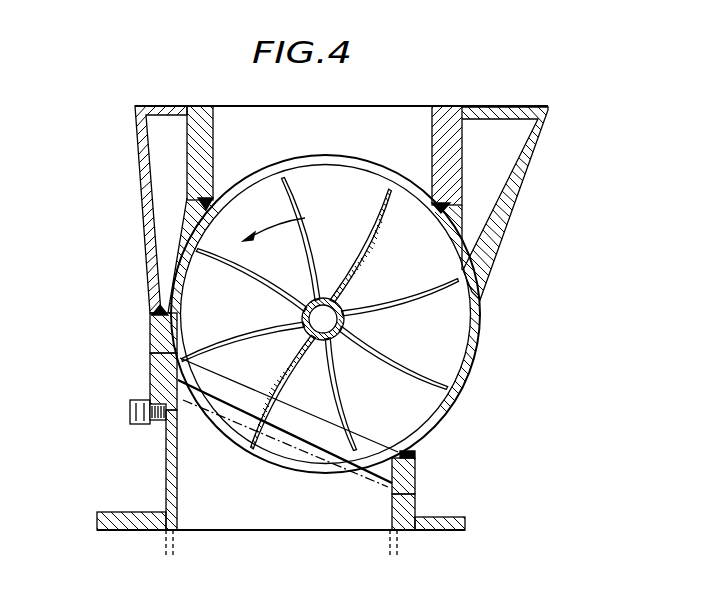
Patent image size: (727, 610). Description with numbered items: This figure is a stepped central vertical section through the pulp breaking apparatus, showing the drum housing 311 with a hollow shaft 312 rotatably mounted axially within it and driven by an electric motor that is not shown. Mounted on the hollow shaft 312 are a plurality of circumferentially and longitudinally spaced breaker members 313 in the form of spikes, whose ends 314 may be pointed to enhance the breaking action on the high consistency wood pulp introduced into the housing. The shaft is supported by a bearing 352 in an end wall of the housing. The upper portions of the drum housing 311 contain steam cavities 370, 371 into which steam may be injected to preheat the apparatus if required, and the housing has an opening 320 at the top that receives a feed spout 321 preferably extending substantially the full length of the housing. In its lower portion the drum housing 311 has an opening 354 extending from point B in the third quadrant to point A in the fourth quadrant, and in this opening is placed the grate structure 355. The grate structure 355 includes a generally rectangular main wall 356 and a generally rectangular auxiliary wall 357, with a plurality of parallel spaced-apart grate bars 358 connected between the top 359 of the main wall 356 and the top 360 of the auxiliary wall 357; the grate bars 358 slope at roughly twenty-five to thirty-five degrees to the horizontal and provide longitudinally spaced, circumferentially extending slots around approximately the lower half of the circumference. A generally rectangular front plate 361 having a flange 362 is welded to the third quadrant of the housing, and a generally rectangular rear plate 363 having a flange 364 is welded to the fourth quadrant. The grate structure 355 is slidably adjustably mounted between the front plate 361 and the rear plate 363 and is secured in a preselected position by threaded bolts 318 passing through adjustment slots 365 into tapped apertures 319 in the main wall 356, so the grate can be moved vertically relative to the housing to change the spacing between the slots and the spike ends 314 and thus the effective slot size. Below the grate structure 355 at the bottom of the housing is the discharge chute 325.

The drum housing 311 is at (474, 248).
The hollow shaft 312 is at (353, 321).
The breaker members 313 is at (360, 262).
The ends of the spikes 314 is at (447, 147).
The threaded bolts 318 is at (140, 418).
The tapped apertures 319 is at (160, 433).
The opening 320 is at (349, 165).
The feed spout 321 is at (392, 186).
The discharge chute 325 is at (278, 507).
The bearing 352 is at (415, 485).
The opening 354 is at (320, 463).
The grate structure 355 is at (423, 538).
The main wall 356 is at (180, 500).
The auxiliary wall 357 is at (393, 538).
The grate bars 358 is at (385, 447).
The top of main wall 359 is at (153, 380).
The top of auxiliary wall 360 is at (415, 475).
The front plate 361 is at (150, 315).
The flange 362 is at (122, 523).
The rear plate 363 is at (415, 497).
The flange 364 is at (465, 528).
The adjustment slots 365 is at (160, 475).
The steam cavity 370 is at (488, 181).
The steam cavity 371 is at (162, 162).